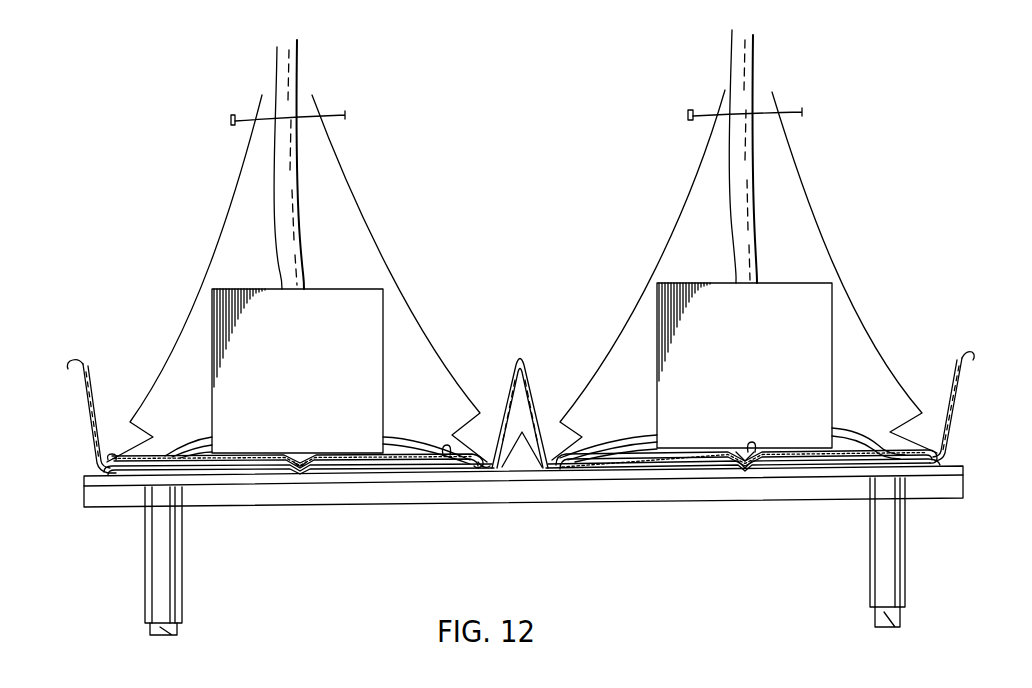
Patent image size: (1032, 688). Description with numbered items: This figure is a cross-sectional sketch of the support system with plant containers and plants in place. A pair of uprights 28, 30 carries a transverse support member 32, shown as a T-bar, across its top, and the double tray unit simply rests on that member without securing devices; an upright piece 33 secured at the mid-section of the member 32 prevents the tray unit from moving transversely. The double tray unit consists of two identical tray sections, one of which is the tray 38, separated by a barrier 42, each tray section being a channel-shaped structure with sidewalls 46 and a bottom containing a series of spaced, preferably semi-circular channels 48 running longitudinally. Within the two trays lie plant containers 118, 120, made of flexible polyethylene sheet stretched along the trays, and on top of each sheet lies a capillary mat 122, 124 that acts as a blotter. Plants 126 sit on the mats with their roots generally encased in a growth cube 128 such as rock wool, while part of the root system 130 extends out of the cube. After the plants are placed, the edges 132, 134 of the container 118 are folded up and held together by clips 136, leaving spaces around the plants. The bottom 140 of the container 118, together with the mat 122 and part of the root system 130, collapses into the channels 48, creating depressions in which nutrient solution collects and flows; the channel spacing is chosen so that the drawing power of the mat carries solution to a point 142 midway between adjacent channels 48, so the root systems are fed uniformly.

The upright 28 is at (160, 583).
The upright 30 is at (885, 562).
The transverse support member 32 is at (233, 497).
The upright piece 33 is at (525, 460).
The tray 38 is at (479, 491).
The barrier 42 is at (536, 434).
The sidewall 46 is at (86, 420).
The channel 48 is at (113, 478).
The plant container 118 is at (297, 252).
The plant container 120 is at (672, 233).
The capillary mat 122 is at (440, 460).
The capillary mat 124 is at (748, 468).
The plant 126 is at (288, 72).
The growth cube 128 is at (350, 328).
The root system 130 is at (208, 437).
The edge of container 132 is at (262, 97).
The edge of container 134 is at (312, 100).
The clip 136 is at (346, 118).
The bottom of container 140 is at (365, 465).
The point midway between channels 142 is at (388, 463).